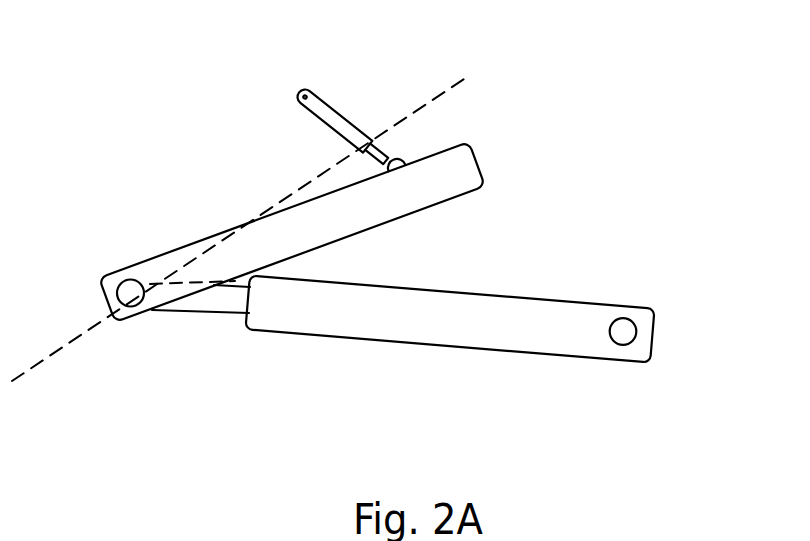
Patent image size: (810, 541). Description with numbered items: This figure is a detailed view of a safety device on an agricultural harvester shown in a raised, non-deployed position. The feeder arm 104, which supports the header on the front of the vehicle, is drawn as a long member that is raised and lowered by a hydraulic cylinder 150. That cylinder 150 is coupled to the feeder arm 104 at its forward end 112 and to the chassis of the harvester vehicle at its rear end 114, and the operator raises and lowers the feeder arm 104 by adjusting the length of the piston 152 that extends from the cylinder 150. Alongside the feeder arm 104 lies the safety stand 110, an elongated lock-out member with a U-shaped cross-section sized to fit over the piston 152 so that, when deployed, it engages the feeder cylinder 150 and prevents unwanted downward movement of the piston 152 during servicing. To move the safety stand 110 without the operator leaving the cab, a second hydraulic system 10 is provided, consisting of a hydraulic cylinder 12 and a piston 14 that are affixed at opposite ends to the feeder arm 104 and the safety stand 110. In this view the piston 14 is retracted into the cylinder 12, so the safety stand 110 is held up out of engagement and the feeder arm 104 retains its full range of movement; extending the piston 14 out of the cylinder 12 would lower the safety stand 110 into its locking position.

The feeder arm 104 is at (399, 40).
The second hydraulic system 10 is at (520, 30).
The hydraulic cylinder 12 is at (333, 108).
The piston 14 is at (383, 153).
The safety stand 110 is at (310, 220).
The forward end 112 is at (128, 290).
The rear end 114 is at (625, 332).
The hydraulic cylinder 150 is at (450, 328).
The piston 152 is at (227, 302).